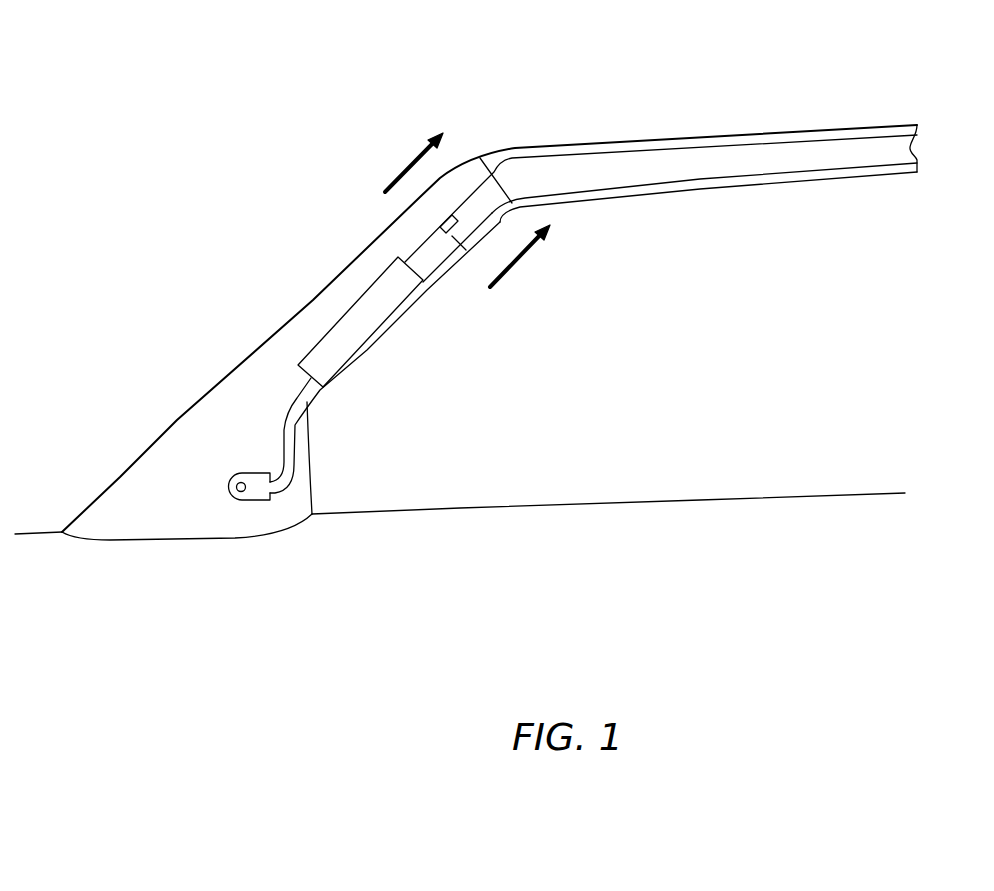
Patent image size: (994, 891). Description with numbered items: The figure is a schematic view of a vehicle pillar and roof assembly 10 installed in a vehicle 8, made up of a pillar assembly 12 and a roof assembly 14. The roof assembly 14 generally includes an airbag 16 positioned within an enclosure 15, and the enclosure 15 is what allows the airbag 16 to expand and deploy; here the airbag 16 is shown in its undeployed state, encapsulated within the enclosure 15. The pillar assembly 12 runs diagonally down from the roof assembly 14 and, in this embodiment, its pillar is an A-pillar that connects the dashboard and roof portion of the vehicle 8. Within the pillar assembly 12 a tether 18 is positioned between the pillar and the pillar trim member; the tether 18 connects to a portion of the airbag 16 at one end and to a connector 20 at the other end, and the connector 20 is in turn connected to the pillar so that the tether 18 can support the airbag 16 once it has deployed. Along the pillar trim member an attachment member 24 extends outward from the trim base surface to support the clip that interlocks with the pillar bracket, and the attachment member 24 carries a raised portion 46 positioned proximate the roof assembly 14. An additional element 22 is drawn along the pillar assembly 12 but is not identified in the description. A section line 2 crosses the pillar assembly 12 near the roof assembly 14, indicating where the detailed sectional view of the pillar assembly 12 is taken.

The vehicle 8 is at (813, 373).
The vehicle pillar and roof assembly 10 is at (187, 111).
The pillar assembly 12 is at (229, 337).
The roof assembly 14 is at (715, 217).
The enclosure 15 is at (785, 186).
The airbag 16 is at (657, 165).
The tether 18 is at (308, 402).
The connector 20 is at (262, 500).
The module housing 22 is at (343, 350).
The attachment member 24 is at (442, 220).
The raised portion 46 is at (460, 236).
The section line 2- 2 is at (469, 225).